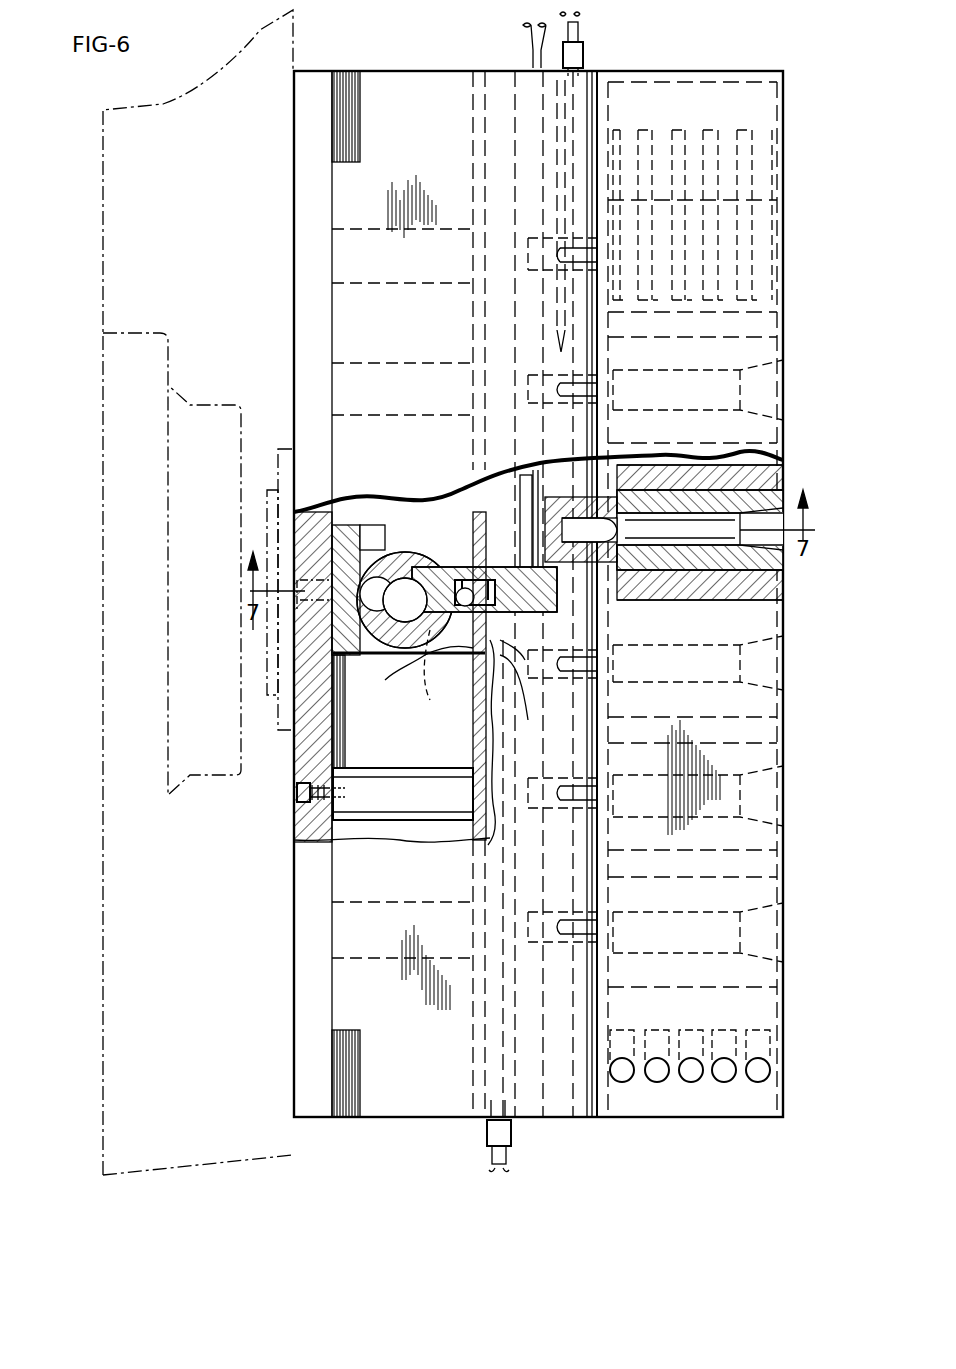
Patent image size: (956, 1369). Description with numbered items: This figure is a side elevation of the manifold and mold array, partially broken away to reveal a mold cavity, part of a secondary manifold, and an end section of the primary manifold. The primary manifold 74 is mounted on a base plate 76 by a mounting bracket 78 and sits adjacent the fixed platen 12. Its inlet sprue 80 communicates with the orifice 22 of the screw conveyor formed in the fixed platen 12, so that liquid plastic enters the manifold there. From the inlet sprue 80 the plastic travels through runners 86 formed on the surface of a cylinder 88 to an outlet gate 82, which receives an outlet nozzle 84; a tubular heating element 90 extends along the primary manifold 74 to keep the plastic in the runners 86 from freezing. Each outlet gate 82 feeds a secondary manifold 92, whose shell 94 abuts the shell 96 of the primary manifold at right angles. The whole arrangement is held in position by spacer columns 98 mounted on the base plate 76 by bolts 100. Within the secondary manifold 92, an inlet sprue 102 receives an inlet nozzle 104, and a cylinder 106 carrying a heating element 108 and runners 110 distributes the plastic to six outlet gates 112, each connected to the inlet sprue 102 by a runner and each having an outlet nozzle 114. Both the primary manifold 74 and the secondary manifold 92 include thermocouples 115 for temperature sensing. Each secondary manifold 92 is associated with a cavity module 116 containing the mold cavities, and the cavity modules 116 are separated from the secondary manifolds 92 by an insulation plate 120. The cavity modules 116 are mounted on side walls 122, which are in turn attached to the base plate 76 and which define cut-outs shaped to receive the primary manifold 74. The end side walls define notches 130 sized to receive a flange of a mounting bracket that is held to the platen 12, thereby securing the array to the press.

The fixed platen 12 is at (210, 231).
The orifice 22 is at (320, 612).
The primary manifold 74 is at (384, 688).
The base plate 76 is at (303, 330).
The mounting bracket 78 is at (349, 520).
The inlet sprue 80 is at (340, 672).
The outlet gate 82 is at (460, 610).
The outlet nozzle 84 is at (395, 655).
The runners 86 is at (395, 640).
The cylinder 88 is at (400, 555).
The tubular heating element 90 is at (395, 580).
The secondary manifold 92 is at (452, 520).
The shells of the secondary manifolds 94 is at (455, 520).
The shell of the primary manifold 96 is at (305, 525).
The spacer columns 98 is at (412, 360).
The bolts 100 is at (295, 802).
The inlet sprue 102 is at (480, 560).
The inlet nozzle 104 is at (468, 680).
The cylinder 106 is at (500, 685).
The heating element 108 is at (522, 650).
The runners 110 is at (510, 490).
The outlet gates 112 is at (575, 485).
The outlet nozzle 114 is at (556, 495).
The thermocouples 115 is at (583, 42).
The cavity module 116 is at (702, 428).
The insulation plate 120 is at (597, 71).
The side walls 122 is at (430, 1120).
The notches 130 is at (350, 78).